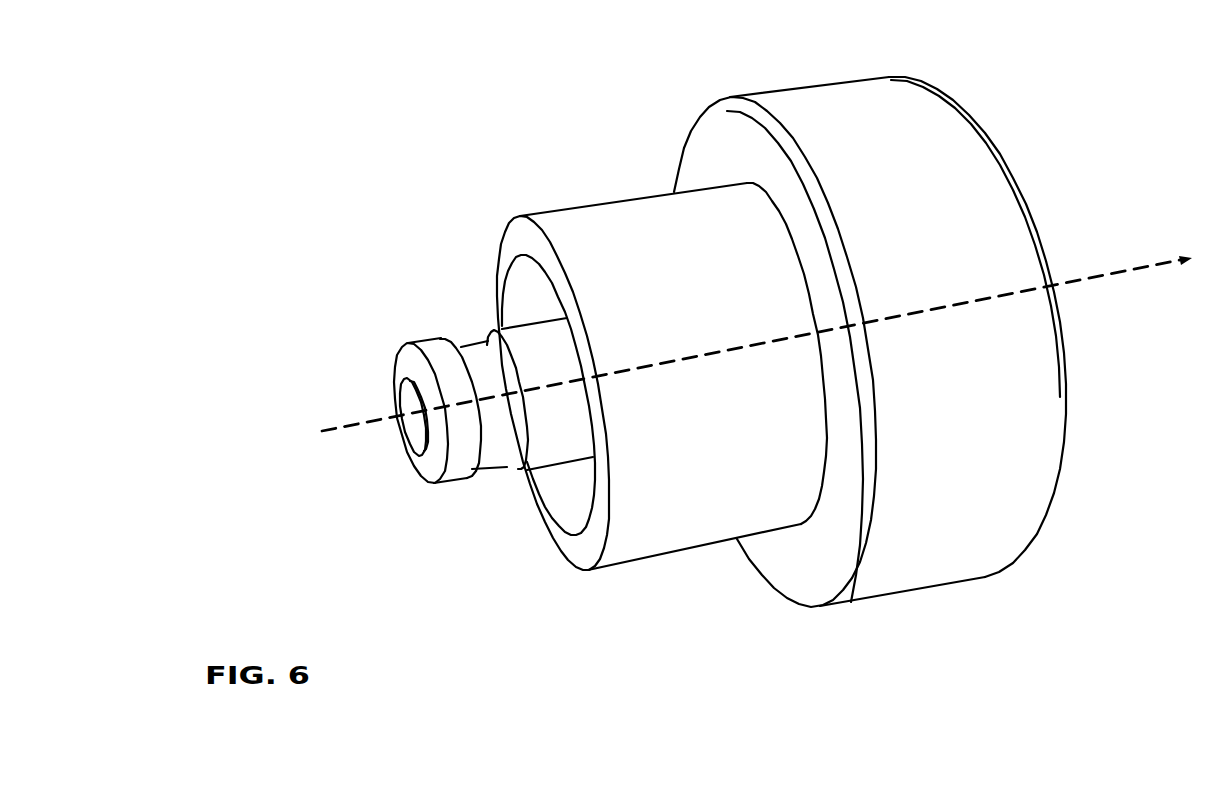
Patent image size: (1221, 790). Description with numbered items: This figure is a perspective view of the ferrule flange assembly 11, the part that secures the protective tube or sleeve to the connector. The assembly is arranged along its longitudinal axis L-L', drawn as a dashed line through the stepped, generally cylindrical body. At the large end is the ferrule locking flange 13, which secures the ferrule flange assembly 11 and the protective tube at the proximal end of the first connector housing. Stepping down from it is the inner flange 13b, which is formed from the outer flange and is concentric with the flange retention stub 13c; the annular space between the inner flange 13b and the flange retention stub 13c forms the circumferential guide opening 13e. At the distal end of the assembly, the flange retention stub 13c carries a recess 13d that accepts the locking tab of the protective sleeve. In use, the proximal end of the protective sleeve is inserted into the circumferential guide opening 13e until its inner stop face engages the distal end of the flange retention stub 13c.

The ferrule flange assembly 11 is at (237, 84).
The ferrule locking flange 13 is at (870, 342).
The inner flange 13b is at (662, 376).
The flange retention stub 13c is at (432, 492).
The recess 13d is at (480, 352).
The circumferential guide opening 13e is at (565, 493).